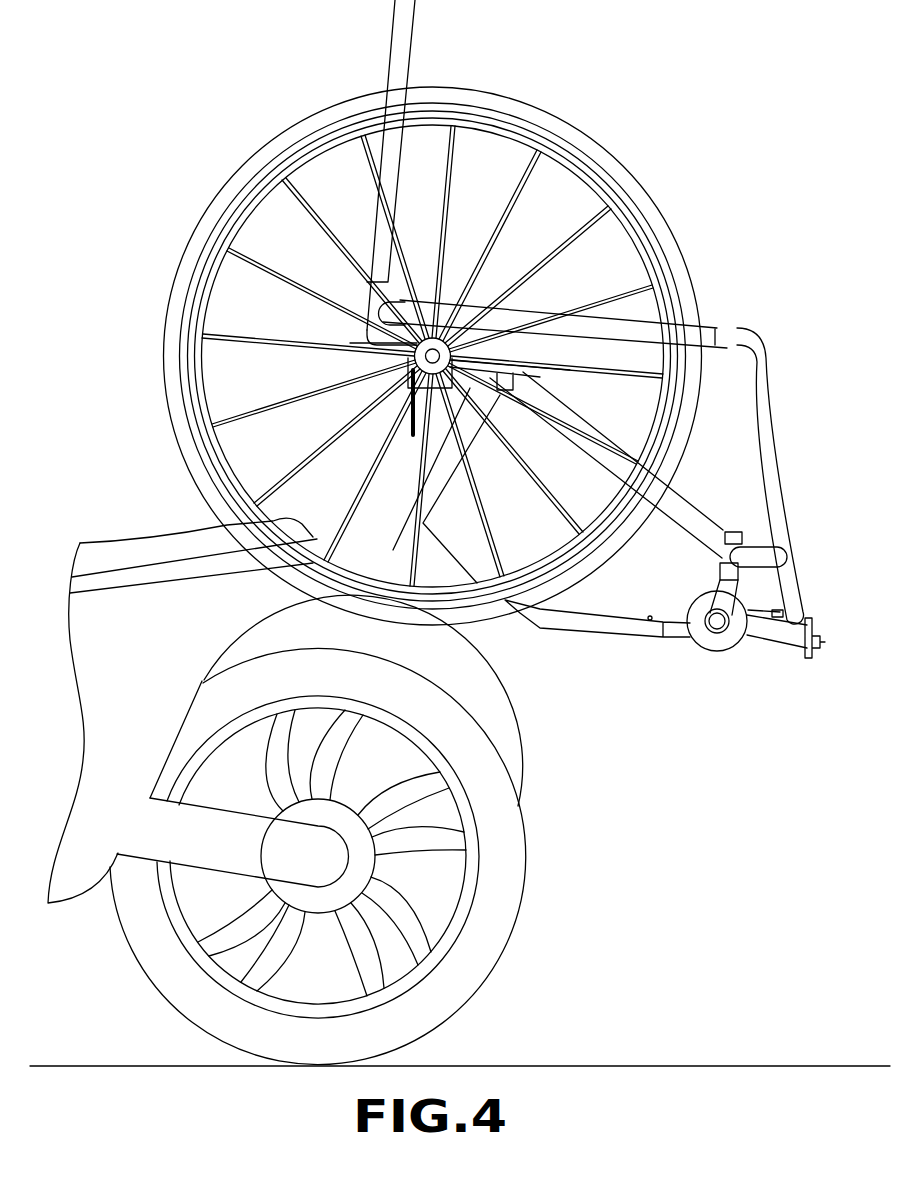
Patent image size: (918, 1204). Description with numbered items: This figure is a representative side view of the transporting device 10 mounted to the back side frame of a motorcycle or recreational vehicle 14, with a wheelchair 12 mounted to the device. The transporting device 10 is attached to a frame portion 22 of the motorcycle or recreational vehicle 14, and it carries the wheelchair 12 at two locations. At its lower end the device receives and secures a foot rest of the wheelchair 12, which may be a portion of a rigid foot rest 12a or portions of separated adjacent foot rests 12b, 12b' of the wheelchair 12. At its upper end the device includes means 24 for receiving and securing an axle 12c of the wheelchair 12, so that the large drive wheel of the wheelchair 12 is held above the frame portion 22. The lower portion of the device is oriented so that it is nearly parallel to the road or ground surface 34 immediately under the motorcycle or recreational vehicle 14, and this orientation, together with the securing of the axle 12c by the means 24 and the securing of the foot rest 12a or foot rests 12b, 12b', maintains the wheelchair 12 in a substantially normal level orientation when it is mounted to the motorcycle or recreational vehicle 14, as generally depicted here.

The transporting device 10 is at (552, 690).
The wheelchair 12 is at (603, 112).
The rigid foot rest 12a is at (763, 655).
The separated adjacent foot rest 12b is at (789, 634).
The separated adjacent foot rest 12b' is at (794, 637).
The axle 12c is at (490, 325).
The motorcycle or recreational vehicle 14 is at (154, 496).
The frame portion 22 is at (226, 616).
The means for receiving and securing an axle 24 is at (398, 400).
The road or ground surface 34 is at (663, 1058).